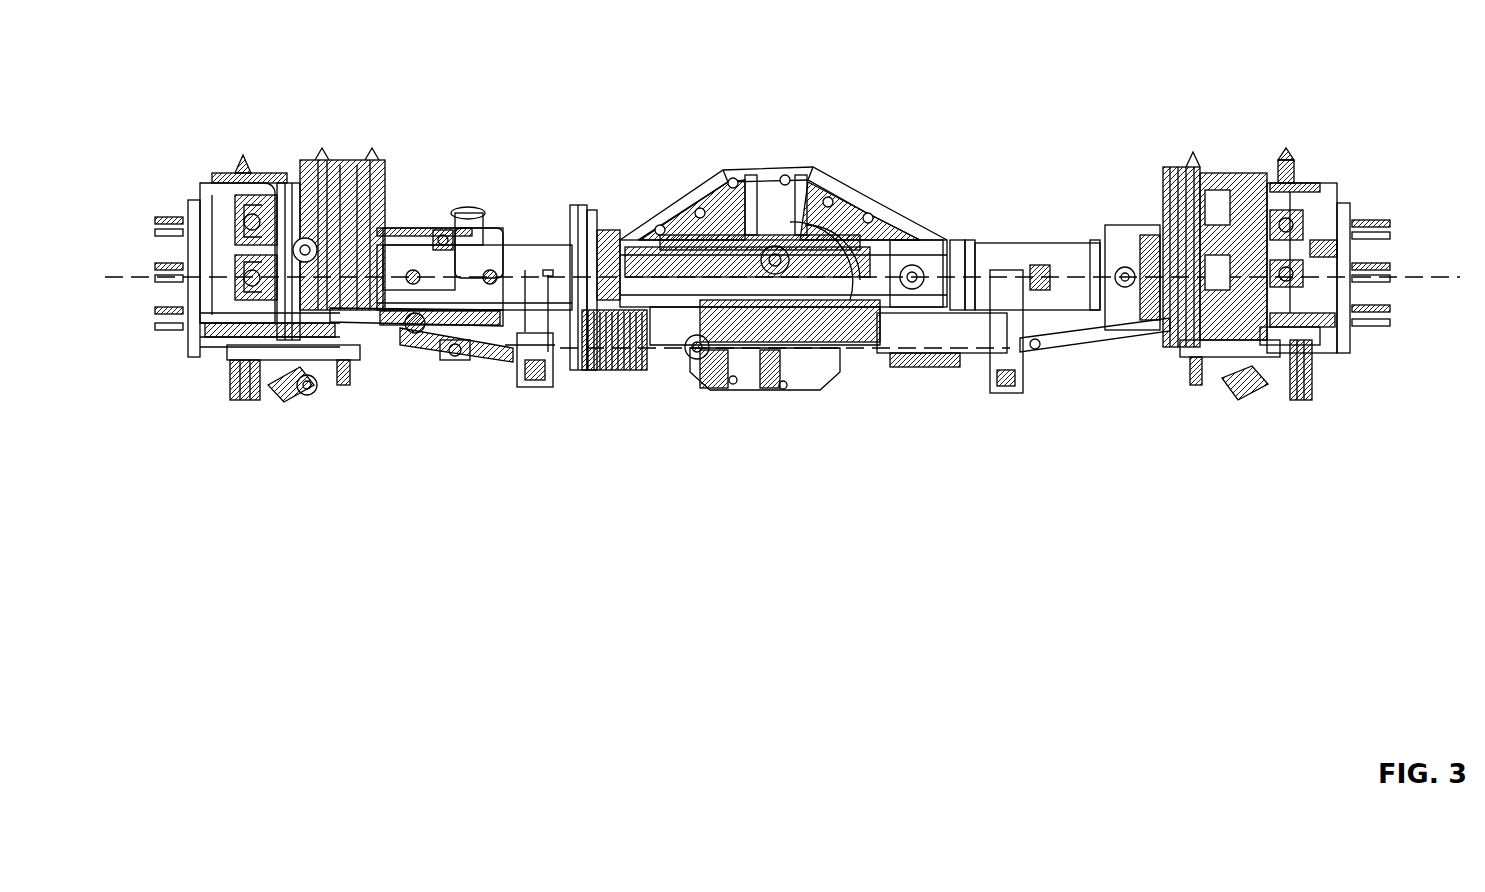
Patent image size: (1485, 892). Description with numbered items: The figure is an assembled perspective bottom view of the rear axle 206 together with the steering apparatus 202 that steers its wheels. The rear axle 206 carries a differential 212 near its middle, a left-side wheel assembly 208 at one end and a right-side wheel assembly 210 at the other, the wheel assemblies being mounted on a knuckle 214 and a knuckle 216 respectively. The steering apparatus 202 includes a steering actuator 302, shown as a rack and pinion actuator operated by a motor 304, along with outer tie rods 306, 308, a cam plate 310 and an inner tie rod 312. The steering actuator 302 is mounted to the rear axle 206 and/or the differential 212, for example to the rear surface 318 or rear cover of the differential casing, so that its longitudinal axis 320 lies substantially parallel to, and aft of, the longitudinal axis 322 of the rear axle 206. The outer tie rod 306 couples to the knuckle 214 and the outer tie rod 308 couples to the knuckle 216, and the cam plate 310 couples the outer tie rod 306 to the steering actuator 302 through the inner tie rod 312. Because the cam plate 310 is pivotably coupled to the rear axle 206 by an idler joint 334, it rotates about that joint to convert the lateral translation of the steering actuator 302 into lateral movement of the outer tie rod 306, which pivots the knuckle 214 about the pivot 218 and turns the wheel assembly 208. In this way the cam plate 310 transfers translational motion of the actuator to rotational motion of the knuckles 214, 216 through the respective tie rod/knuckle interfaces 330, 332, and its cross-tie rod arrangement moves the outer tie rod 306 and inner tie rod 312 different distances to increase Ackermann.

The steering apparatus 202 is at (805, 137).
The rear axle 206 is at (1005, 240).
The left-side wheel assembly 208 is at (190, 130).
The right-side wheel assembly 210 is at (1350, 163).
The differential 212 is at (708, 180).
The knuckle 214 is at (305, 352).
The knuckle 216 is at (1245, 370).
The pivot 218 is at (300, 386).
The steering actuator 302 is at (800, 357).
The motor 304 is at (930, 332).
The outer tie rod 306 is at (413, 302).
The outer tie rod 308 is at (1112, 338).
The cam plate 310 is at (473, 330).
The inner tie rod 312 is at (450, 358).
The rear surface 318 is at (790, 222).
The longitudinal axis 320 is at (690, 355).
The longitudinal axis 322 is at (528, 268).
The tie rod/knuckle interface 330 is at (360, 408).
The tie rod/knuckle interface 332 is at (1188, 402).
The idler joint 334 is at (443, 232).